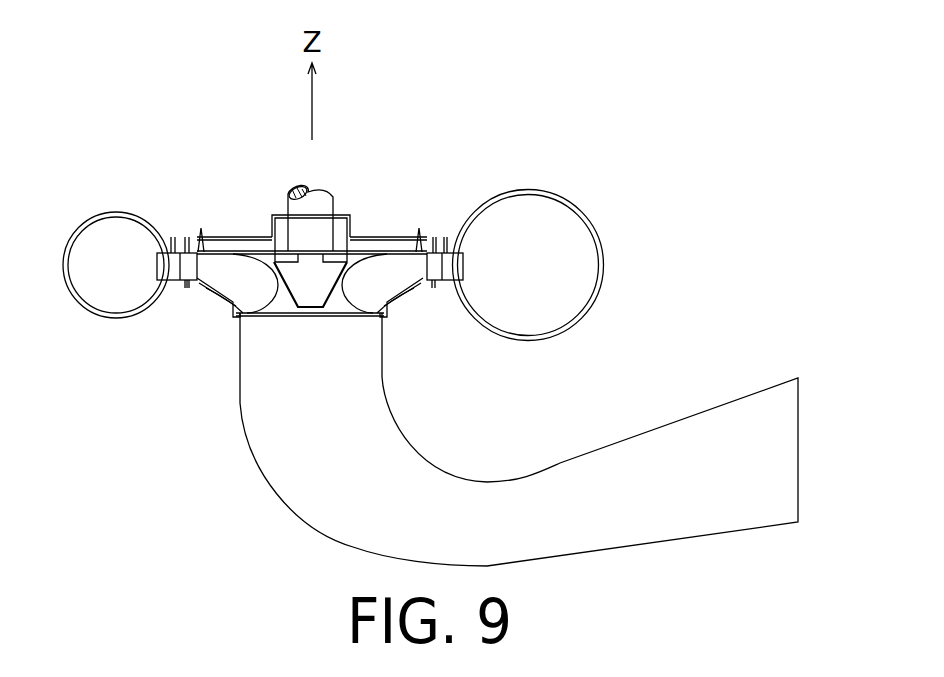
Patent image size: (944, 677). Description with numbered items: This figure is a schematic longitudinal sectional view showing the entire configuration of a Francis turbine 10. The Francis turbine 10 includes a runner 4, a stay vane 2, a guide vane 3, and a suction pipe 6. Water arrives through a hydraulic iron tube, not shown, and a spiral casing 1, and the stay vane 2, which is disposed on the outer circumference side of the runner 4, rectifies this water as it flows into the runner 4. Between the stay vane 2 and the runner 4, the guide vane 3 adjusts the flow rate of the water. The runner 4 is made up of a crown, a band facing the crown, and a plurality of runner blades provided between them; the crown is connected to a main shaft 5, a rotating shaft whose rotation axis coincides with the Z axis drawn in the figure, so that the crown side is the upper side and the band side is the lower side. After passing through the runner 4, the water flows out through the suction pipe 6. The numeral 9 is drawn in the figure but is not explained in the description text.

The spiral casing 1 is at (537, 190).
The stay vane 2 is at (450, 258).
The guide vane 3 is at (430, 260).
The runner 4 is at (383, 278).
The main shaft 5 is at (322, 195).
The suction pipe 6 is at (472, 492).
The second pipe 9 is at (197, 236).
The Francis turbine 10 is at (192, 288).